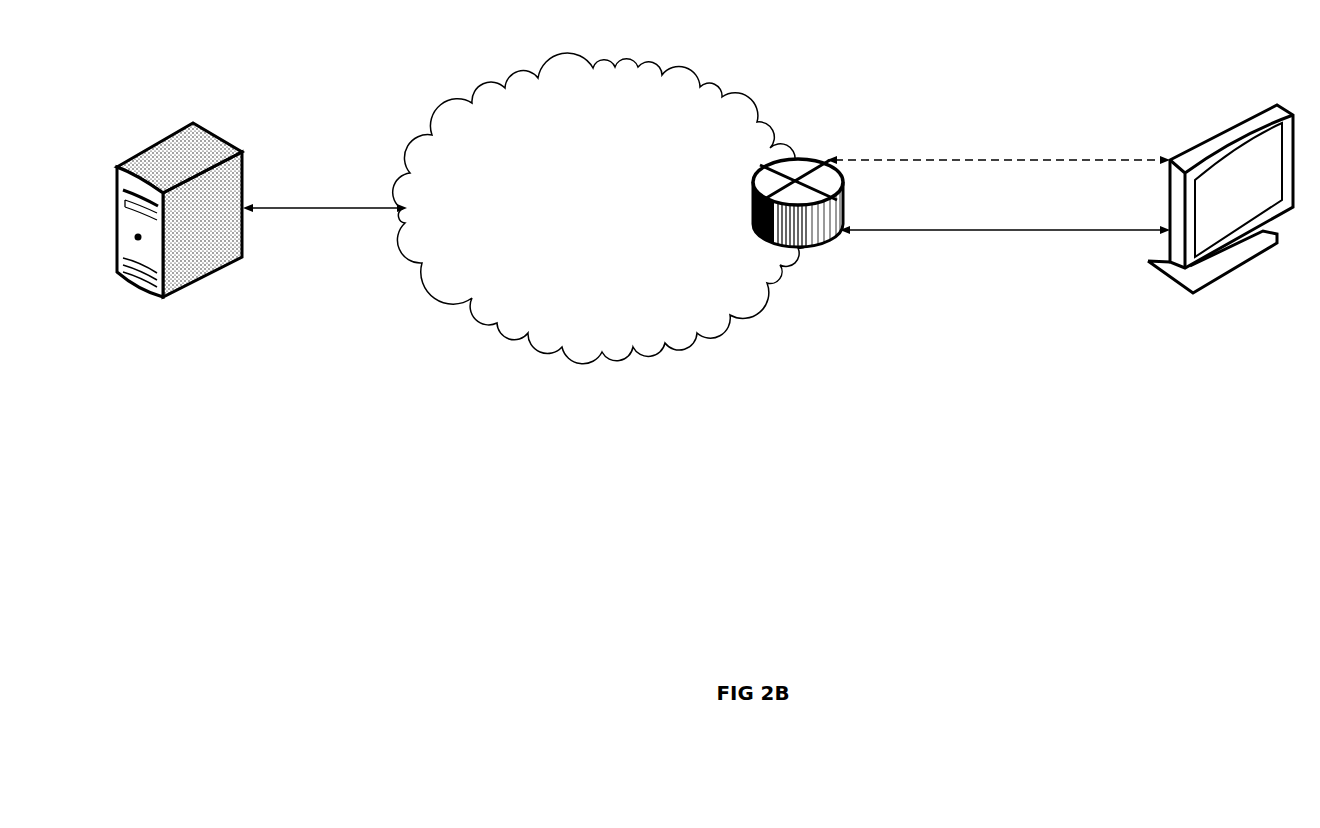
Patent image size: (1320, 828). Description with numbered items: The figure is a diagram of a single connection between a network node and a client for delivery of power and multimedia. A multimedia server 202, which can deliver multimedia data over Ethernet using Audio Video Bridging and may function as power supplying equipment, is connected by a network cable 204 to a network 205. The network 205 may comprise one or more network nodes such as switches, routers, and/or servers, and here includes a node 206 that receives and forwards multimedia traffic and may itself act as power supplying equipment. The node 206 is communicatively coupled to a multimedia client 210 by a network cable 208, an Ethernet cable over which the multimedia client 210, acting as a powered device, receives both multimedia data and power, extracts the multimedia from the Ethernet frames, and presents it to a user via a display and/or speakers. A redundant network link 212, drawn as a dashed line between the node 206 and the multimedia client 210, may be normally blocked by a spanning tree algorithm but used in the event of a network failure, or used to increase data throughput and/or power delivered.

The multimedia server 202 is at (172, 135).
The network cable 204 is at (320, 208).
The network 205 is at (483, 77).
The node 206 is at (763, 166).
The network cable 208 is at (895, 228).
The multimedia client 210 is at (1234, 123).
The redundant network link 212 is at (877, 159).